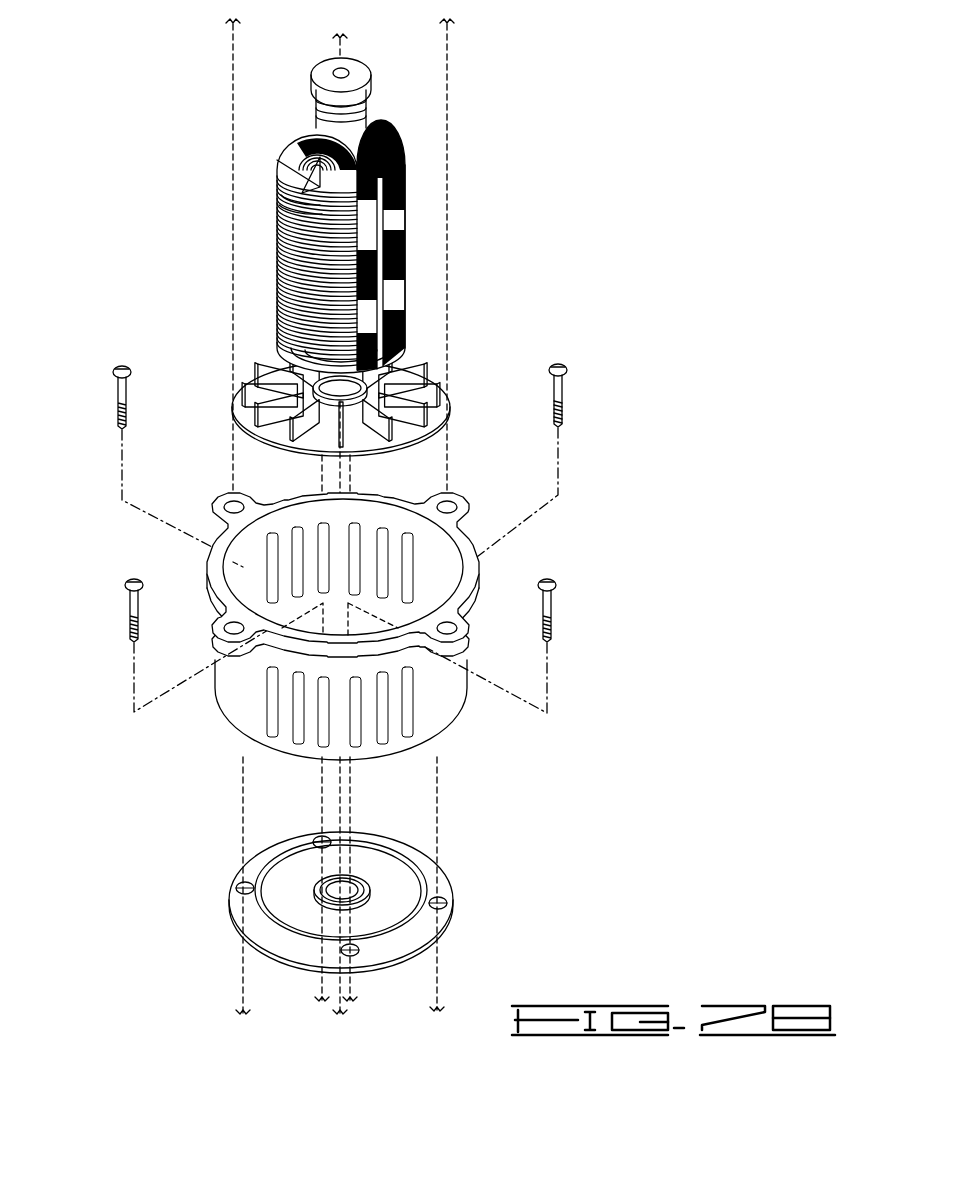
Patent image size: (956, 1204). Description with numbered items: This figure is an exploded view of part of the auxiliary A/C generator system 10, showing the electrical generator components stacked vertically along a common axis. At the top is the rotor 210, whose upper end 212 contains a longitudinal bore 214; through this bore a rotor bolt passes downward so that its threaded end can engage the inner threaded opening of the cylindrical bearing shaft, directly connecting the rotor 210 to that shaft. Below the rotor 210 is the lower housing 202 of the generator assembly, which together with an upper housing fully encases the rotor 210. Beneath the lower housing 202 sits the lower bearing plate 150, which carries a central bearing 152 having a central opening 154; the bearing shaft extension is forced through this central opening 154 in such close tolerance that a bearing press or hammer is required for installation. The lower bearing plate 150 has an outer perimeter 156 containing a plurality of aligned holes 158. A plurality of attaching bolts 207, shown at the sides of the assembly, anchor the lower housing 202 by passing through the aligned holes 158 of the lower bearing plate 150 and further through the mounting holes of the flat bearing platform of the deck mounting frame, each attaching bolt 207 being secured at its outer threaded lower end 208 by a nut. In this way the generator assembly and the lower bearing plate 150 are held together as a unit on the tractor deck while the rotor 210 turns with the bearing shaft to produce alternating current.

The auxiliary A/C generator system 10 is at (668, 75).
The lower bearing plate 150 is at (335, 880).
The central bearing 152 is at (346, 864).
The central opening 154 is at (328, 882).
The outer perimeter 156 is at (386, 843).
The aligned holes 158 is at (322, 838).
The lower housing 202 is at (474, 560).
The attaching bolts 207 is at (340, 490).
The outer threaded lower end 208 is at (564, 410).
The rotor 210 is at (380, 245).
The upper end 212 is at (347, 81).
The longitudinal bore 214 is at (336, 72).